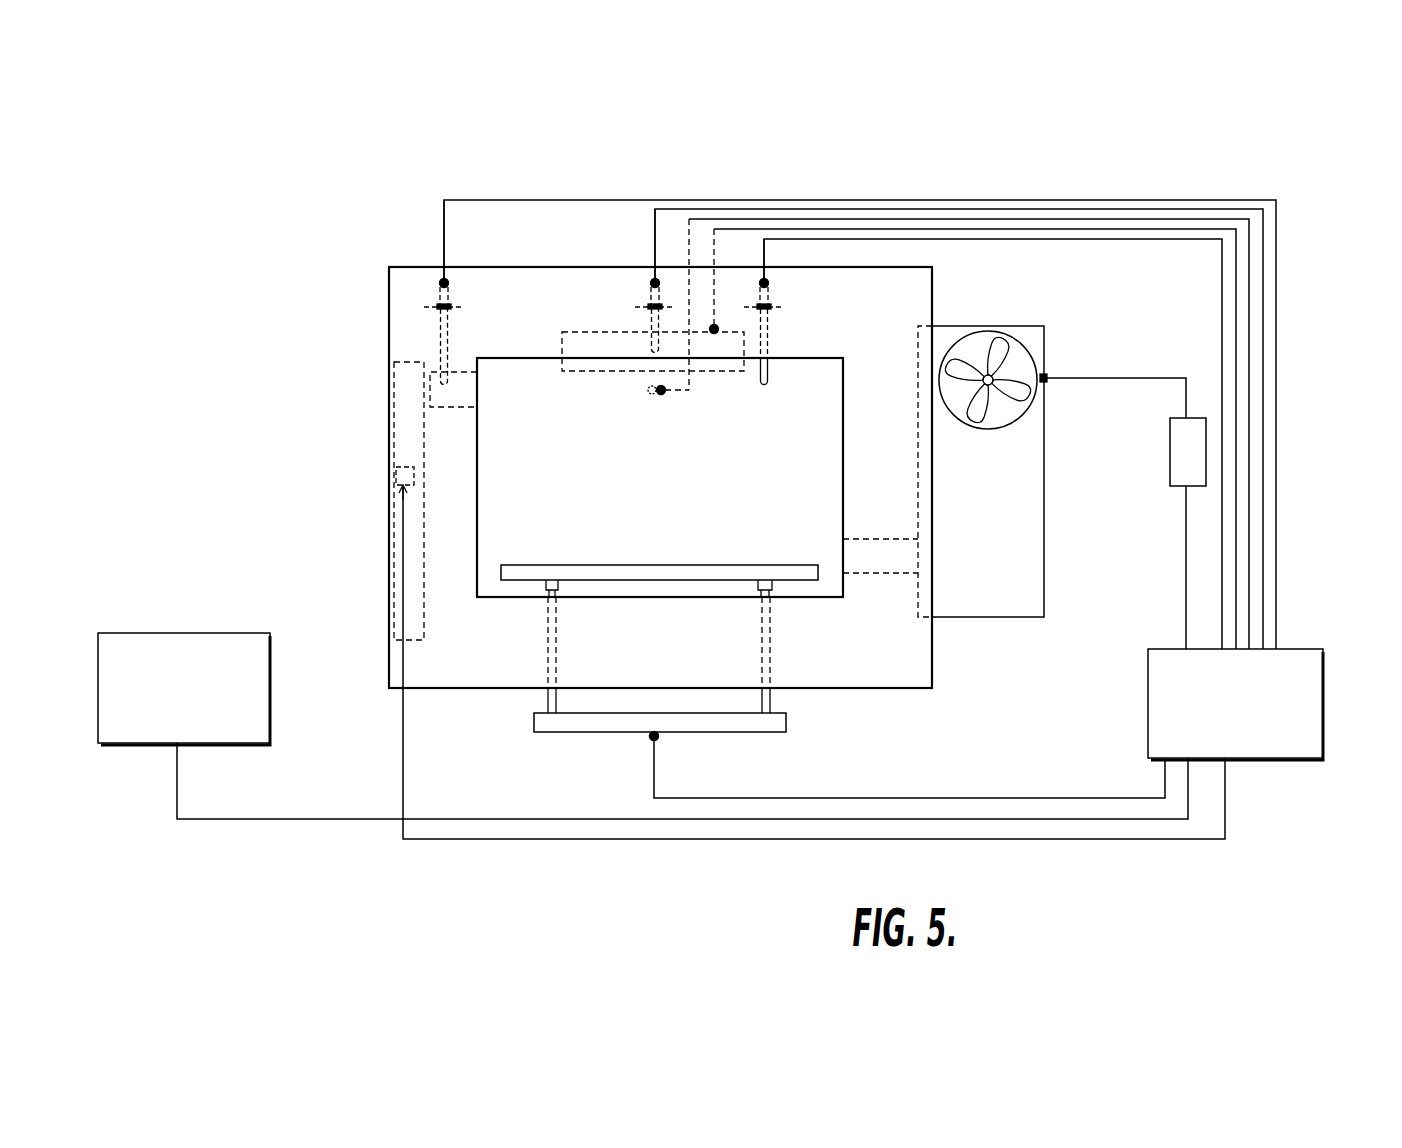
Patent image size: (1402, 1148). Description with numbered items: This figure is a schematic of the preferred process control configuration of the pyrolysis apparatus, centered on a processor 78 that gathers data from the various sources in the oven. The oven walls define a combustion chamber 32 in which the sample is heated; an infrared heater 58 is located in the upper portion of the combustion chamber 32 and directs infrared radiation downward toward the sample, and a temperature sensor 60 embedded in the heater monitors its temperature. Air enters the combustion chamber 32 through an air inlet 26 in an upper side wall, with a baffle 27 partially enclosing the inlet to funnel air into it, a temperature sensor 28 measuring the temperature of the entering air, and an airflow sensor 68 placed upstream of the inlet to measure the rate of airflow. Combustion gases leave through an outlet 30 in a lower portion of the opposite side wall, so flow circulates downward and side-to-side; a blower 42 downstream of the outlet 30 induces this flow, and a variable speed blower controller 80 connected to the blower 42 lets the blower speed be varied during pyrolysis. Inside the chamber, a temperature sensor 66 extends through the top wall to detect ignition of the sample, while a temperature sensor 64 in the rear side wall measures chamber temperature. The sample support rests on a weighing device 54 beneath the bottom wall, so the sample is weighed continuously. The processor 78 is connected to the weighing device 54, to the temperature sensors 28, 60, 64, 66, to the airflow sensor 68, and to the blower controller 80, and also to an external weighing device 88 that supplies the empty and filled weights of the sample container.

The air inlet 26 is at (437, 393).
The baffle 27 is at (400, 367).
The temperature sensor 28 is at (437, 300).
The outlet 30 is at (883, 573).
The combustion chamber 32 is at (820, 370).
The blower 42 is at (1035, 359).
The weighing device 54 is at (557, 735).
The infrared heater 58 is at (562, 332).
The temperature sensor 60 is at (637, 307).
The temperature sensor 64 is at (650, 386).
The temperature sensor 66 is at (783, 305).
The airflow sensor 68 is at (396, 483).
The processor 78 is at (1325, 690).
The variable speed blower controller 80 is at (1170, 456).
The external weighing device 88 is at (203, 633).